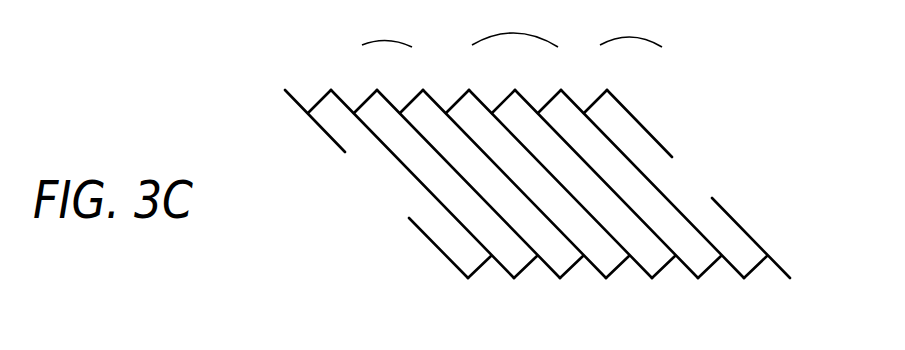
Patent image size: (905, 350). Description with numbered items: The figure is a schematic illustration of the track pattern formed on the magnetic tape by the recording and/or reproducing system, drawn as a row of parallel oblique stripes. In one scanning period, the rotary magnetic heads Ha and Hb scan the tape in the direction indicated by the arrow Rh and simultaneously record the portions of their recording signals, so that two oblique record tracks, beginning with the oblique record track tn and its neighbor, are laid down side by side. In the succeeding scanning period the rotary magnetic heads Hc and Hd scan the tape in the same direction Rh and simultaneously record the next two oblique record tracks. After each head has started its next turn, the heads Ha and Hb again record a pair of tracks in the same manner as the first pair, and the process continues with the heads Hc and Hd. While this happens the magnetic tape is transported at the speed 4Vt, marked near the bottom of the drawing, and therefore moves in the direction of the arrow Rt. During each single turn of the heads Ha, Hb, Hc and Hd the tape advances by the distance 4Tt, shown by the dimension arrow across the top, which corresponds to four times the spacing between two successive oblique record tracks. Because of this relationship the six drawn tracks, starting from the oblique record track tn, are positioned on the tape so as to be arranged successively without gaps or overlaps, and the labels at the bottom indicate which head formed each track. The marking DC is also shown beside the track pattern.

The distance 4Tt is at (515, 84).
The oblique record track tn is at (371, 107).
The rotary magnetic head Ha is at (523, 256).
The rotary magnetic head Hb is at (563, 256).
The rotary magnetic head Hc is at (612, 256).
The rotary magnetic head Hd is at (655, 256).
The arrow Rh is at (430, 255).
The arrow Rt is at (343, 275).
The speed 4Vt is at (313, 277).
The direction of tape DC is at (268, 186).